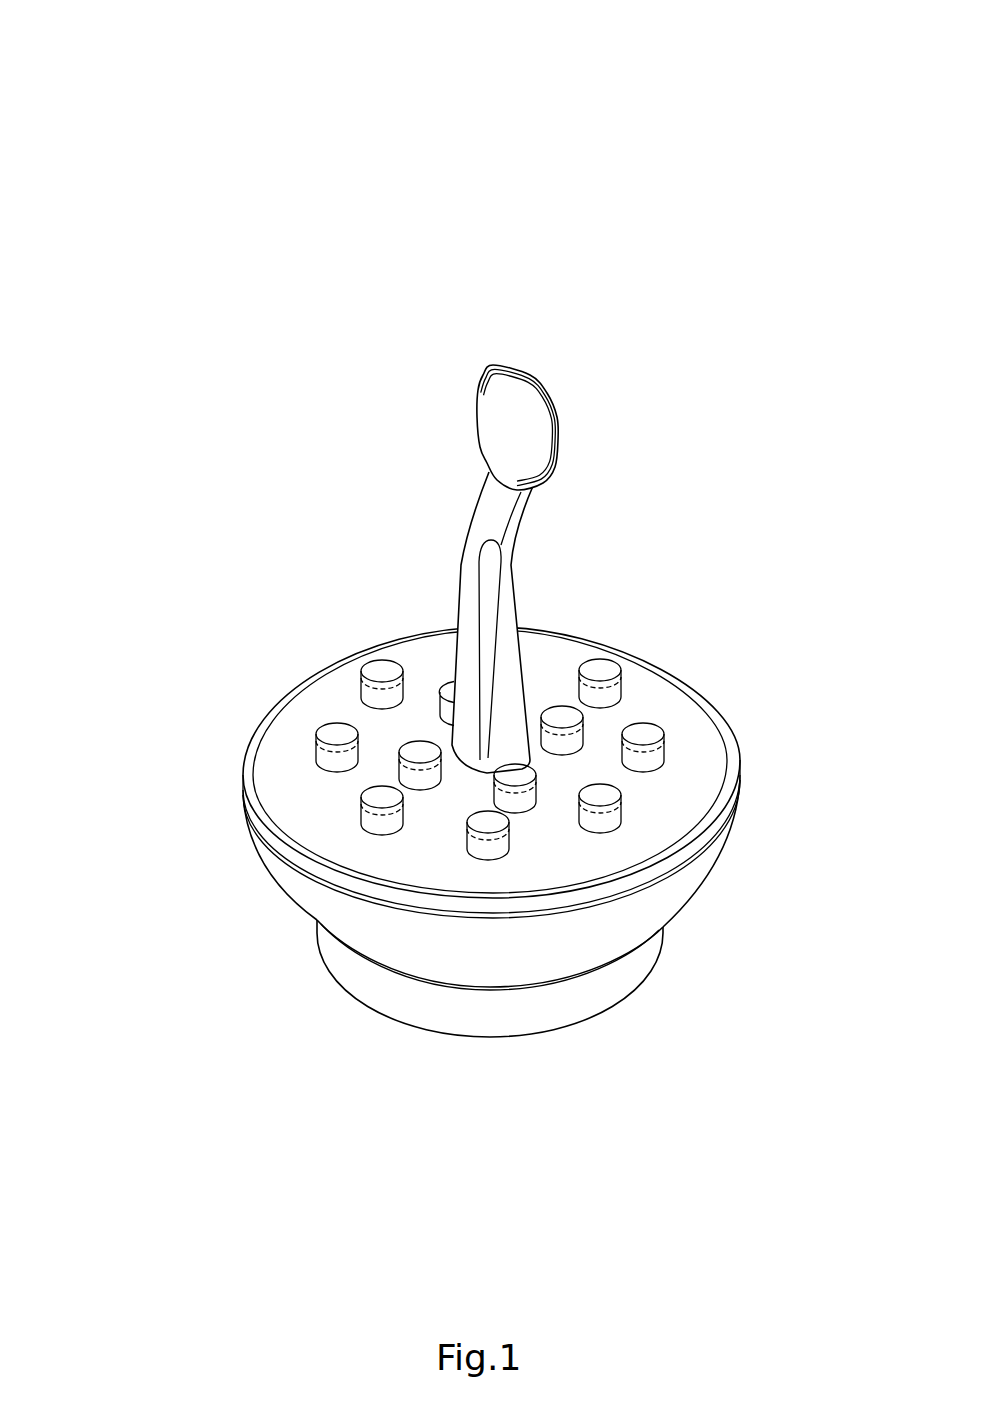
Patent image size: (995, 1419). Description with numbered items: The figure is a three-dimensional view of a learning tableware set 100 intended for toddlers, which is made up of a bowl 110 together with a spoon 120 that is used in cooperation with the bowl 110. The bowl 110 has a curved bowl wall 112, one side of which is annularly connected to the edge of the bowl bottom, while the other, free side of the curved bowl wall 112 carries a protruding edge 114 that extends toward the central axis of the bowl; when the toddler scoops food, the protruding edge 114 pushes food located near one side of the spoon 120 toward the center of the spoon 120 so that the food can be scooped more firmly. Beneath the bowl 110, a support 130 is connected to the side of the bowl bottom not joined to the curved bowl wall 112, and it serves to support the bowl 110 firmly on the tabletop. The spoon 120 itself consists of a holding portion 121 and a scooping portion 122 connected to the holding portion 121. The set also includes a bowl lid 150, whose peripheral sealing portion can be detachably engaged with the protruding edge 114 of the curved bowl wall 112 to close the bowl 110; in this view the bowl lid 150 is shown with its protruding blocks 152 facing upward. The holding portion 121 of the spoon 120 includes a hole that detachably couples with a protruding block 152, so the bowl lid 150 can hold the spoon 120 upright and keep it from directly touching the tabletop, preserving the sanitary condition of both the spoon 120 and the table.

The learning tableware set 100 is at (76, 32).
The bowl 110 is at (554, 832).
The curved bowl wall 112 is at (318, 900).
The protruding edge 114 is at (732, 767).
The spoon 120 is at (561, 520).
The holding portion 121 is at (513, 577).
The scooping portion 122 is at (558, 457).
The support 130 is at (611, 997).
The bowl lid 150 is at (467, 672).
The protruding block 152 is at (375, 672).